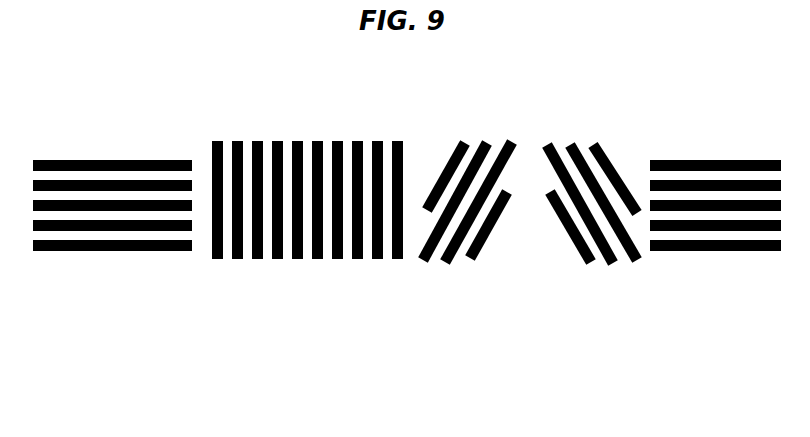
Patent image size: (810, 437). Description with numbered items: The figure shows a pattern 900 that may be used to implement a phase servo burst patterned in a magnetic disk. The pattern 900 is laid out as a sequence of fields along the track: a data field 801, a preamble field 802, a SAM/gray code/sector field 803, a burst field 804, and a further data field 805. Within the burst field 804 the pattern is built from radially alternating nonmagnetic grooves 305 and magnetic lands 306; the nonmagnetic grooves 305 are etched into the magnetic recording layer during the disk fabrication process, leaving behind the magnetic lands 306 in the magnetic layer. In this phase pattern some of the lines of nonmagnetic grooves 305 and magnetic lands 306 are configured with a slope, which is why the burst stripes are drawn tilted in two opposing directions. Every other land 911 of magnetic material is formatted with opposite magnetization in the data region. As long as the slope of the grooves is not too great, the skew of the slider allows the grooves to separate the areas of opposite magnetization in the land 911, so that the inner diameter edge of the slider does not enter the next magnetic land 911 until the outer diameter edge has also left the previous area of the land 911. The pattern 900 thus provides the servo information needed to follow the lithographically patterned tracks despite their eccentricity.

The pattern 900 is at (230, 71).
The data field 801 is at (32, 313).
The preamble field 802 is at (205, 313).
The SAM / gray code / sector field 803 is at (309, 313).
The burst field 804 is at (531, 223).
The data field 805 is at (787, 313).
The nonmagnetic grooves 305 is at (492, 139).
The magnetic lands 306 is at (632, 168).
The land 911 is at (569, 273).